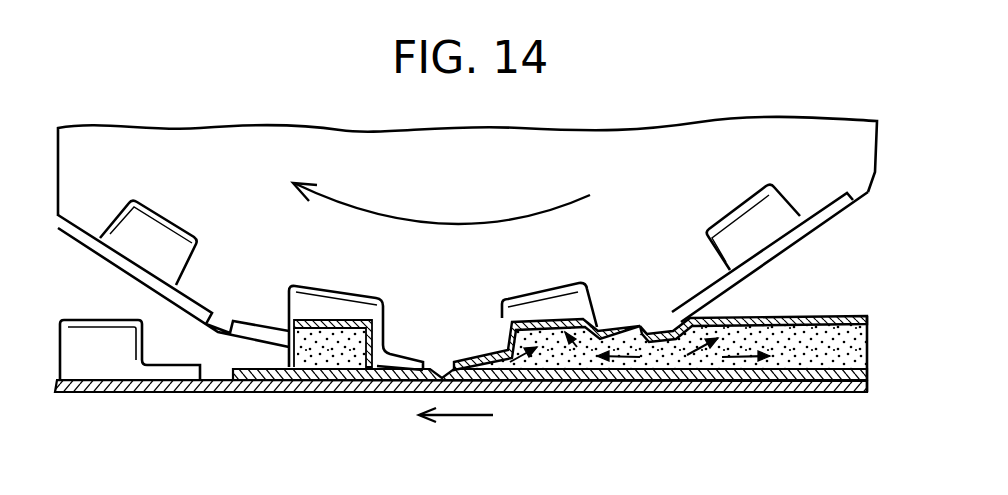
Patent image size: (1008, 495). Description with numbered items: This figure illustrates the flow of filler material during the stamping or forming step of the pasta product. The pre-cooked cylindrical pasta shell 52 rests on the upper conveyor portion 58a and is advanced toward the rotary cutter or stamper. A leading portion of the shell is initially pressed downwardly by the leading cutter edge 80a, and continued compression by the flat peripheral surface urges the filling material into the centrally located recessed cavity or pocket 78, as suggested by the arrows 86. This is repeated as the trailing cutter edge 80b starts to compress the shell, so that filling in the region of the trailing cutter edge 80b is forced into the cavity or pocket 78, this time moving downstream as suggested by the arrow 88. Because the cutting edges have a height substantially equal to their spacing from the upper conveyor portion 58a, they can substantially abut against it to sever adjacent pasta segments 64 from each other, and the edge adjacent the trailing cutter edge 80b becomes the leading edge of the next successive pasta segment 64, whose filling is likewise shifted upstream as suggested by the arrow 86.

The pre-cooked cylindrical pasta shell 52 is at (828, 362).
The upper conveyor portion 58a is at (125, 390).
The pasta segment 64 is at (83, 333).
The recessed cavity 78 is at (172, 226).
The leading cutter edge 80a is at (475, 353).
The trailing cutter edge 80b is at (660, 317).
The arrow 86 is at (525, 338).
The arrow 88 is at (620, 365).